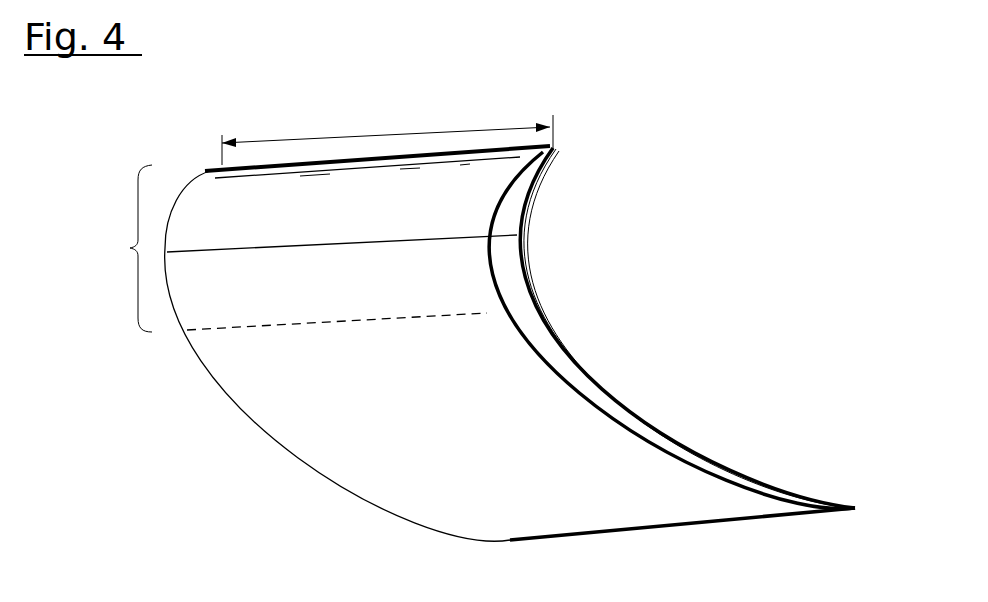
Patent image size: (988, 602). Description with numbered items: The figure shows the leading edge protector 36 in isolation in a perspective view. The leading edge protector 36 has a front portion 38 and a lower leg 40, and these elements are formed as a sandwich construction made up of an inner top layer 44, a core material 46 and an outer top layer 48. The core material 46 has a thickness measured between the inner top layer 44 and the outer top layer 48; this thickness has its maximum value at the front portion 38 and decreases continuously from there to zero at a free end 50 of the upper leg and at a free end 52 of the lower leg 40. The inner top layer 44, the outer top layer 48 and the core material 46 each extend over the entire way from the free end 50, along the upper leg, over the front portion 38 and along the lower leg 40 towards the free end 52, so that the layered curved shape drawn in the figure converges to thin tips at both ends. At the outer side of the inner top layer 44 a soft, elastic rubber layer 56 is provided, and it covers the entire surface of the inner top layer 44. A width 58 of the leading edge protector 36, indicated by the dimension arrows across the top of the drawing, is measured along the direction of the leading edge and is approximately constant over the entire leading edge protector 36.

The leading edge protector 36 is at (786, 249).
The front portion 38 is at (122, 248).
The lower leg 40 is at (390, 448).
The inner top layer 44 is at (583, 355).
The core material 46 is at (605, 383).
The outer top layer 48 is at (620, 425).
The free end 50 is at (550, 150).
The free end 52 is at (857, 500).
The rubber layer 56 is at (538, 295).
The width 58 is at (398, 125).